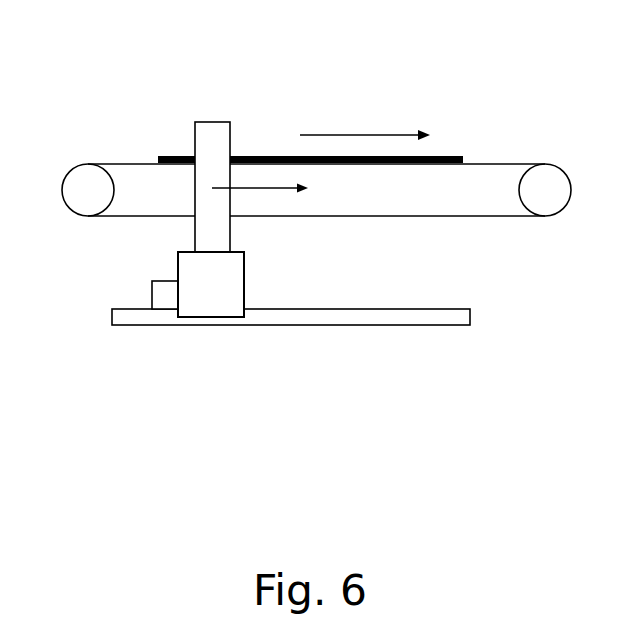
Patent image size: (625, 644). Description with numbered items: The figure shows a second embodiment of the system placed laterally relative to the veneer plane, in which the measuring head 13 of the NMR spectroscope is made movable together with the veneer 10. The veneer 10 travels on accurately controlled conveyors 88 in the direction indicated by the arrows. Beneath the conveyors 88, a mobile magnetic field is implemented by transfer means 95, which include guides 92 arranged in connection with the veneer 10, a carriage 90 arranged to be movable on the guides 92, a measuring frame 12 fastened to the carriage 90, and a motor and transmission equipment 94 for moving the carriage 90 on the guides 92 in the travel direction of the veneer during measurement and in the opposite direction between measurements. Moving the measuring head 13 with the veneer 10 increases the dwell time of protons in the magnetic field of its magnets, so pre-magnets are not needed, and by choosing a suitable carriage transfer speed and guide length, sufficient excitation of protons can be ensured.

The veneer 10 is at (257, 156).
The measuring frame 12 is at (210, 217).
The measuring head 13 is at (234, 150).
The conveyors 88 is at (397, 217).
The carriage 90 is at (207, 292).
The guides 92 is at (355, 325).
The motor and transmission equipment 94 is at (162, 295).
The transfer means 95 is at (190, 397).